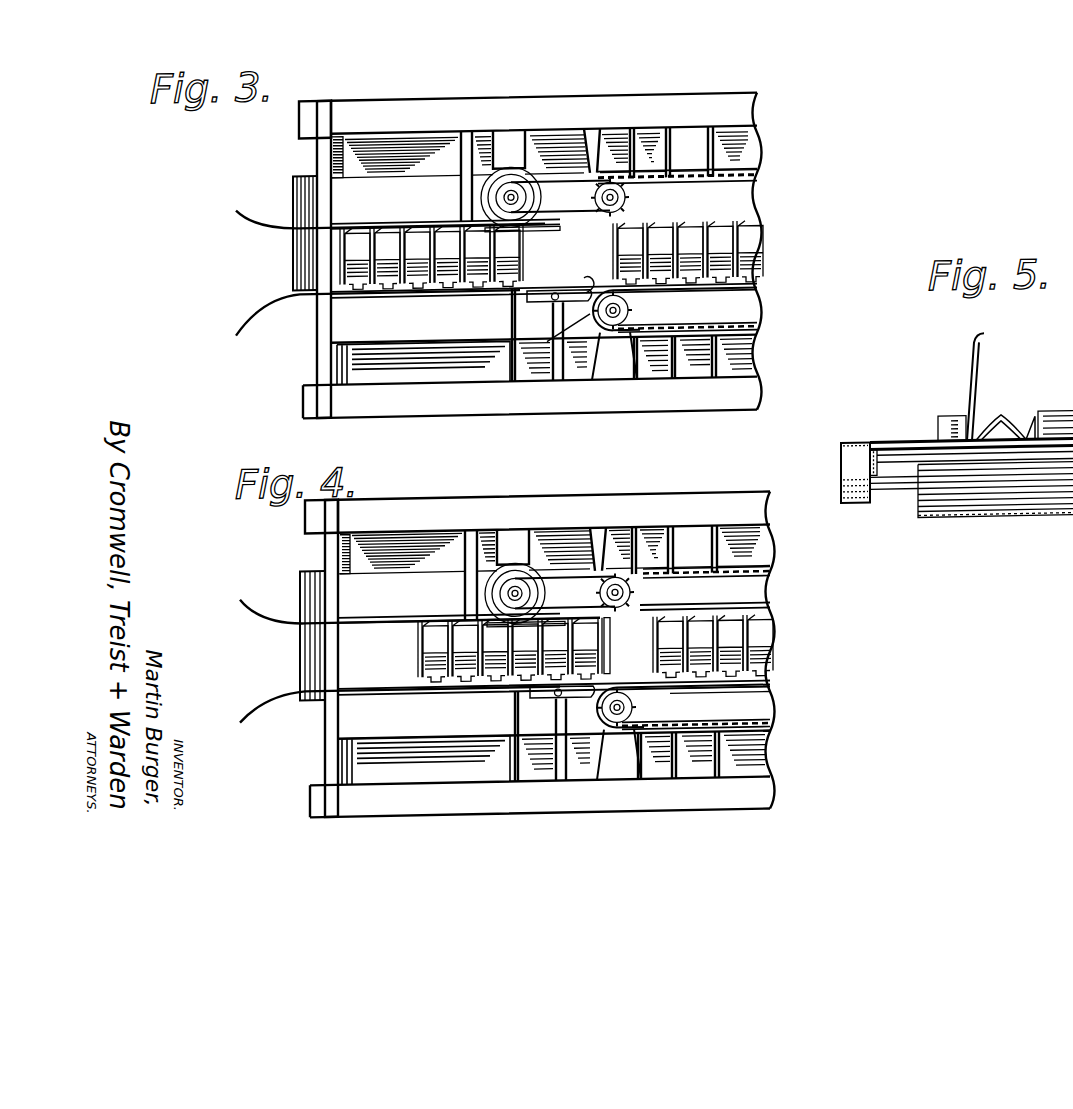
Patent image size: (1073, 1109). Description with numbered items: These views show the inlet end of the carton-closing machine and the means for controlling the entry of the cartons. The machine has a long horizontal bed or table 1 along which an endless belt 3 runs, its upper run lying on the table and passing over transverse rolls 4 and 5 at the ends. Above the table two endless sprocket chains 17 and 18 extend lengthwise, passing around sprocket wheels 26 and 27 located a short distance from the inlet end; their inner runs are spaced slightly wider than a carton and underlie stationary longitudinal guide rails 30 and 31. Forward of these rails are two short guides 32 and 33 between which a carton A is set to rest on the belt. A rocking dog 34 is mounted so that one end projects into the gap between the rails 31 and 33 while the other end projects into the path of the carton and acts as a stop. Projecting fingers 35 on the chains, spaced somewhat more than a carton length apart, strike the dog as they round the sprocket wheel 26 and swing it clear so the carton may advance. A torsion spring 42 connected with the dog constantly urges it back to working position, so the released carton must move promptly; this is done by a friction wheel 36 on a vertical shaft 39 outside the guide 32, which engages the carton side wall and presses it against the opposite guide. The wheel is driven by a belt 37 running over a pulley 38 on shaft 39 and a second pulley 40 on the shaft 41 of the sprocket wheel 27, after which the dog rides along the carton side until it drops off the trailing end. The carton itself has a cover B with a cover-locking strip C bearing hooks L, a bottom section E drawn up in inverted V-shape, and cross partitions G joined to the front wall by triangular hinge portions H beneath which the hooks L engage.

In FIG. 3, the bed or table 1 is at (530, 256).
In FIG. 4, the bed or table 1 is at (405, 542).
In FIG. 5, the bed or table 1 is at (878, 446).
In FIG. 3, the endless belt 3 is at (360, 347).
In FIG. 4, the endless belt 3 is at (447, 730).
In FIG. 5, the endless belt 3 is at (916, 456).
In FIG. 3, the transverse roll 4 is at (300, 350).
In FIG. 4, the transverse roll 4 is at (303, 569).
In FIG. 5, the transverse roll 4 is at (918, 512).
In FIG. 3, the transverse roll 5 is at (548, 92).
In FIG. 3, the sprocket chain 17 is at (745, 193).
In FIG. 4, the sprocket chain 17 is at (705, 574).
In FIG. 3, the sprocket chain 18 is at (752, 334).
In FIG. 4, the sprocket chain 18 is at (755, 734).
In FIG. 3, the sprocket wheel 26 is at (629, 319).
In FIG. 4, the sprocket wheel 26 is at (634, 715).
In FIG. 3, the sprocket wheel 27 is at (626, 206).
In FIG. 4, the sprocket wheel 27 is at (631, 604).
In FIG. 4, the longitudinal guide rail 30 is at (750, 615).
In FIG. 4, the longitudinal guide rail 31 is at (760, 696).
In FIG. 3, the short guide 32 is at (245, 204).
In FIG. 4, the short guide 32 is at (268, 576).
In FIG. 4, the short guide 33 is at (280, 696).
In FIG. 3, the rocking dog 34 is at (548, 306).
In FIG. 4, the rocking dog 34 is at (555, 702).
In FIG. 5, the rocking dog 34 is at (955, 418).
In FIG. 3, the projecting finger 35 is at (550, 344).
In FIG. 3, the friction wheel 36 is at (490, 206).
In FIG. 4, the friction wheel 36 is at (495, 596).
In FIG. 3, the belt 37 is at (561, 184).
In FIG. 4, the belt 37 is at (558, 581).
In FIG. 3, the pulley 38 is at (490, 194).
In FIG. 4, the pulley 38 is at (516, 589).
In FIG. 5, the pulley 38 is at (1050, 415).
In FIG. 3, the shaft 39 is at (512, 194).
In FIG. 3, the second pulley 40 is at (600, 213).
In FIG. 4, the second pulley 40 is at (614, 585).
In FIG. 3, the shaft 41 is at (608, 209).
In FIG. 3, the torsion spring 42 is at (586, 290).
In FIG. 5, the torsion spring 42 is at (938, 434).
In FIG. 3, the carton A is at (338, 254).
In FIG. 4, the carton A is at (420, 644).
In FIG. 5, the carton A is at (1005, 421).
In FIG. 5, the cover B is at (981, 375).
In FIG. 3, the cover-locking strip C is at (385, 290).
In FIG. 4, the cover-locking strip C is at (435, 692).
In FIG. 5, the cover-locking strip C is at (978, 338).
In FIG. 4, the bottom section E is at (612, 651).
In FIG. 3, the cross partition G is at (410, 245).
In FIG. 4, the cross partition G is at (475, 638).
In FIG. 3, the hinge portion H is at (524, 236).
In FIG. 4, the hinge portion H is at (425, 661).
In FIG. 3, the cover-locking hook L is at (452, 291).
In FIG. 4, the cover-locking hook L is at (485, 686).